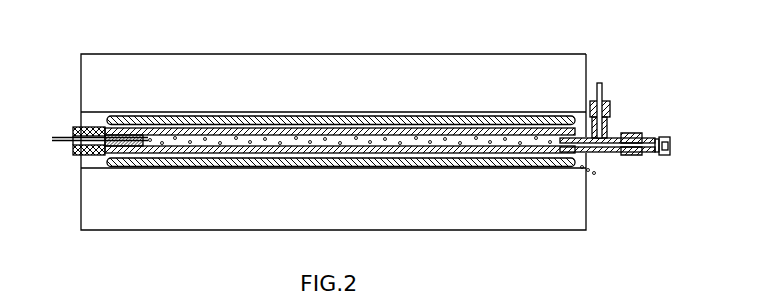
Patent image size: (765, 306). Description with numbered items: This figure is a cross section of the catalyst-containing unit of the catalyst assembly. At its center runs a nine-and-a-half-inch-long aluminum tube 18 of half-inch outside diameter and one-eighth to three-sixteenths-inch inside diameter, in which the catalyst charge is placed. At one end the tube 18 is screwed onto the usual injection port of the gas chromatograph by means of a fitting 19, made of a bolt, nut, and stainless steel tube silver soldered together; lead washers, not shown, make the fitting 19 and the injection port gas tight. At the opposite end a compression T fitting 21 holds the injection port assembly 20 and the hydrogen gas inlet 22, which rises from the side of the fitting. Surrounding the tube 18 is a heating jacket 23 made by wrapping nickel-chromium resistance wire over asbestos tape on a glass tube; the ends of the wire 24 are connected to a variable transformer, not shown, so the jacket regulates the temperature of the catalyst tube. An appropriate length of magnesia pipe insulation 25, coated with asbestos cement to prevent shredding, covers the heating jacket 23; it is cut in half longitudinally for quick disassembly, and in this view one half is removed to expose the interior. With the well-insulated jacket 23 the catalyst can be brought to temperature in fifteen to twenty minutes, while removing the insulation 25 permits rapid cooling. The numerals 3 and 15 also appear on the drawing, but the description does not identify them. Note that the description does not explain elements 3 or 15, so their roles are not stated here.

The outlet fitting 3 is at (672, 144).
The inlet tube 15 is at (55, 137).
The aluminum tube 18 is at (584, 153).
The fitting 19 is at (72, 155).
The injection port assembly 20 is at (658, 135).
The compression T fitting 21 is at (608, 130).
The hydrogen gas inlet 22 is at (603, 88).
The heating jacket 23 is at (115, 118).
The wire ends 24 is at (598, 176).
The magnesia pipe insulation 25 is at (308, 232).